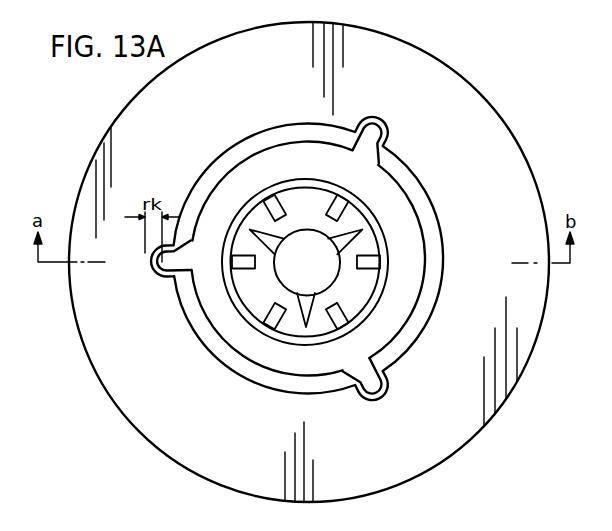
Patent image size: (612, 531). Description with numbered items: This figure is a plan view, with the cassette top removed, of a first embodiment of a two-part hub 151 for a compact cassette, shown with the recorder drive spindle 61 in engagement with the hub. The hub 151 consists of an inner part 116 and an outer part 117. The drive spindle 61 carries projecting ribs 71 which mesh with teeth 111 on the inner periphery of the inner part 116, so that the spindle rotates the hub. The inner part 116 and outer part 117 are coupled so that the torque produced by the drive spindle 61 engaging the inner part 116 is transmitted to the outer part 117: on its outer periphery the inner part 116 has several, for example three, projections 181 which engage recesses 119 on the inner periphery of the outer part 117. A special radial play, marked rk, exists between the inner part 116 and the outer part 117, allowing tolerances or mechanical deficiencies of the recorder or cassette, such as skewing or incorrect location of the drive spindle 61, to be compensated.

The drive spindle 61 is at (323, 258).
The projecting ribs 71 is at (350, 248).
The teeth 111 is at (272, 315).
The inner part 116 is at (390, 188).
The outer part 117 is at (480, 132).
The recesses 119 is at (370, 398).
The hub 151 is at (528, 129).
The projections 181 is at (390, 379).